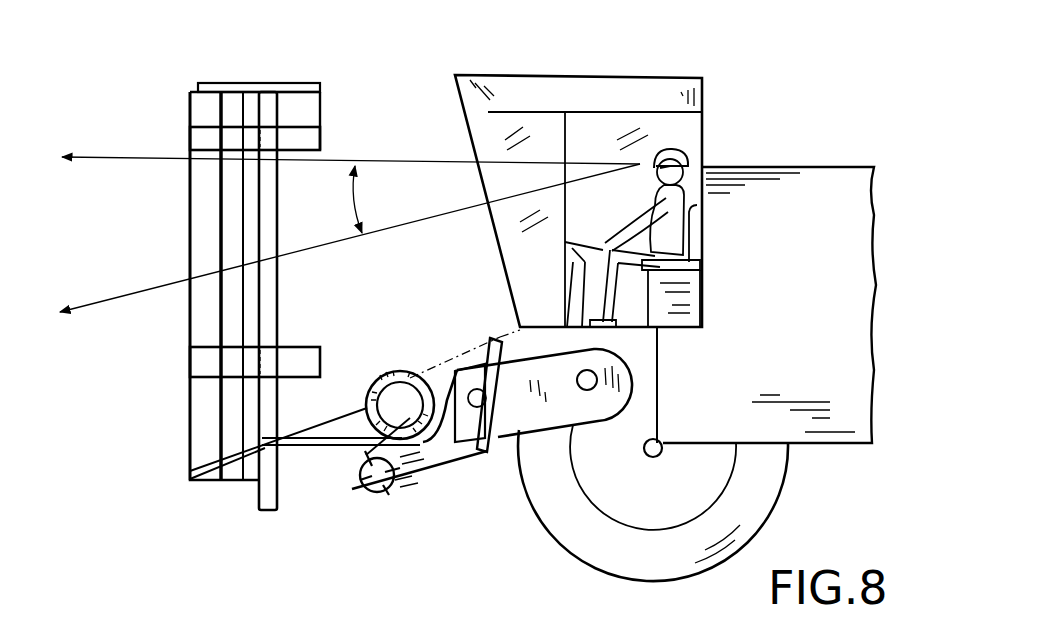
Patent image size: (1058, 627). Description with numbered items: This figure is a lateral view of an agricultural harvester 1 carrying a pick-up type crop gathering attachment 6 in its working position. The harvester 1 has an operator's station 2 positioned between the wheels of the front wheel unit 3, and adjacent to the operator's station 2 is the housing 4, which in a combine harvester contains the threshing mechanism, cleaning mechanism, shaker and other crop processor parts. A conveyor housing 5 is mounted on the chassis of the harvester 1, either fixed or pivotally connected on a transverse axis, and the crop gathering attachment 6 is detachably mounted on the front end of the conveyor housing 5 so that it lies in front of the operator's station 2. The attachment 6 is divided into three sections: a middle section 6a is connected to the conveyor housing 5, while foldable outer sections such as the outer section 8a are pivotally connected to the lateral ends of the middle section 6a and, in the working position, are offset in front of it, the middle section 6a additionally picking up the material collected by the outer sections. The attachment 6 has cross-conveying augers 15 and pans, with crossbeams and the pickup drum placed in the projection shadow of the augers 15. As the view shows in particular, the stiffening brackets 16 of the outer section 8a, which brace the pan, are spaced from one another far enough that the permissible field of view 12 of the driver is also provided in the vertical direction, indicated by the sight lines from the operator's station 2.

The agricultural harvester 1 is at (736, 116).
The operator's station 2 is at (603, 86).
The front wheel unit 3 is at (767, 493).
The housing 4 is at (853, 248).
The conveyor housing 5 is at (513, 414).
The crop gathering attachment 6 is at (168, 427).
The middle section 6a is at (338, 481).
The outer section 8a is at (197, 323).
The field of view 12 is at (354, 193).
The cross-conveying auger 15 is at (422, 443).
The stiffening bracket 16 is at (314, 138).